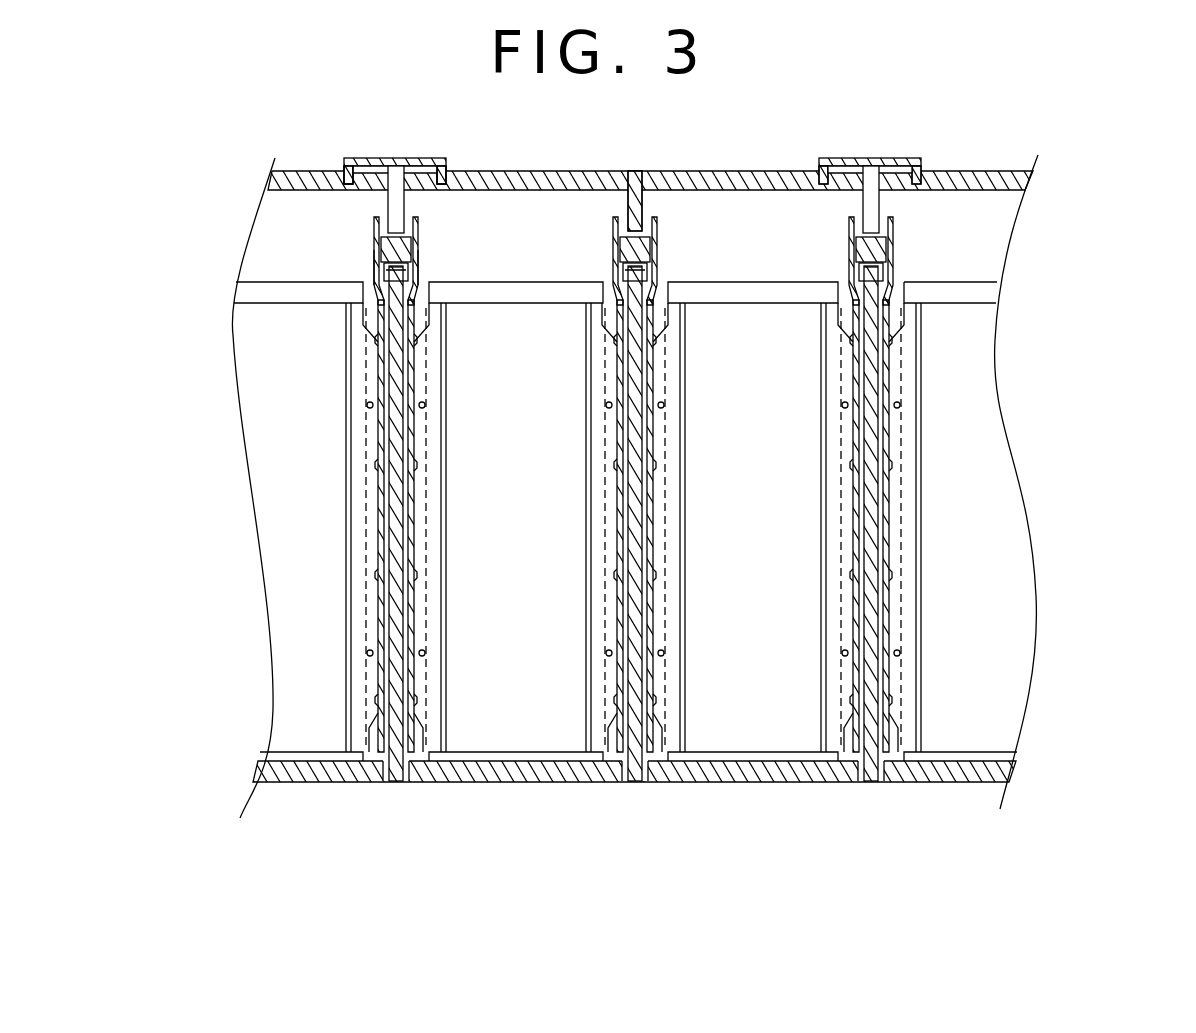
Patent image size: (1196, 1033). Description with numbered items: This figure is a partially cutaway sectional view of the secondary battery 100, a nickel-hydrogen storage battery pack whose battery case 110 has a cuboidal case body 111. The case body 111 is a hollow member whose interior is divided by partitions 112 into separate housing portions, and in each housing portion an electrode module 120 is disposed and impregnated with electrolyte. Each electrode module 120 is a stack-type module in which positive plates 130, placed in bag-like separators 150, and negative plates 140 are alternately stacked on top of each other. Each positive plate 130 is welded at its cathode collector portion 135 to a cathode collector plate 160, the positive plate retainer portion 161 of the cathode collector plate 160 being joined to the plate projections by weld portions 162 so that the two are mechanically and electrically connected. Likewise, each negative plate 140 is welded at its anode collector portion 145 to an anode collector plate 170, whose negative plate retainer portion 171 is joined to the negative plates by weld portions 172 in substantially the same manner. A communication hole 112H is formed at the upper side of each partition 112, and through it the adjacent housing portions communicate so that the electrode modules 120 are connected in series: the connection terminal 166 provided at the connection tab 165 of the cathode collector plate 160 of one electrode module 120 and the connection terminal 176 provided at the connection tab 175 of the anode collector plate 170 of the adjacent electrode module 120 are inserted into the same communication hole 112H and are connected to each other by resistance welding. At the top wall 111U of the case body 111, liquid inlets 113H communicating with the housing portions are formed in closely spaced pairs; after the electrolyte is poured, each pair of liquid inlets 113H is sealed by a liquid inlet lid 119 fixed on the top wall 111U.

The secondary battery 100 is at (955, 132).
The battery case 110 is at (1010, 170).
The case body 111 is at (650, 144).
The top wall 111U is at (750, 171).
The partition 112 is at (638, 592).
The communication hole 112H is at (414, 258).
The liquid inlet 113H is at (377, 158).
The liquid inlet lid 119 is at (395, 156).
The electrode module 120 is at (977, 515).
The positive plate 130 is at (516, 521).
The negative plate 140 is at (516, 521).
The separator 150 is at (516, 521).
The cathode collector portion 135 is at (430, 786).
The anode collector portion 145 is at (372, 783).
The cathode collector plate 160 is at (633, 526).
The positive plate retainer portion 161 is at (412, 505).
The weld portion 162 is at (418, 470).
The connection tab 165 is at (412, 238).
The connection terminal 166 is at (412, 258).
The anode collector plate 170 is at (517, 527).
The negative plate retainer portion 171 is at (380, 496).
The weld portion 172 is at (388, 470).
The connection tab 175 is at (376, 224).
The connection terminal 176 is at (376, 262).